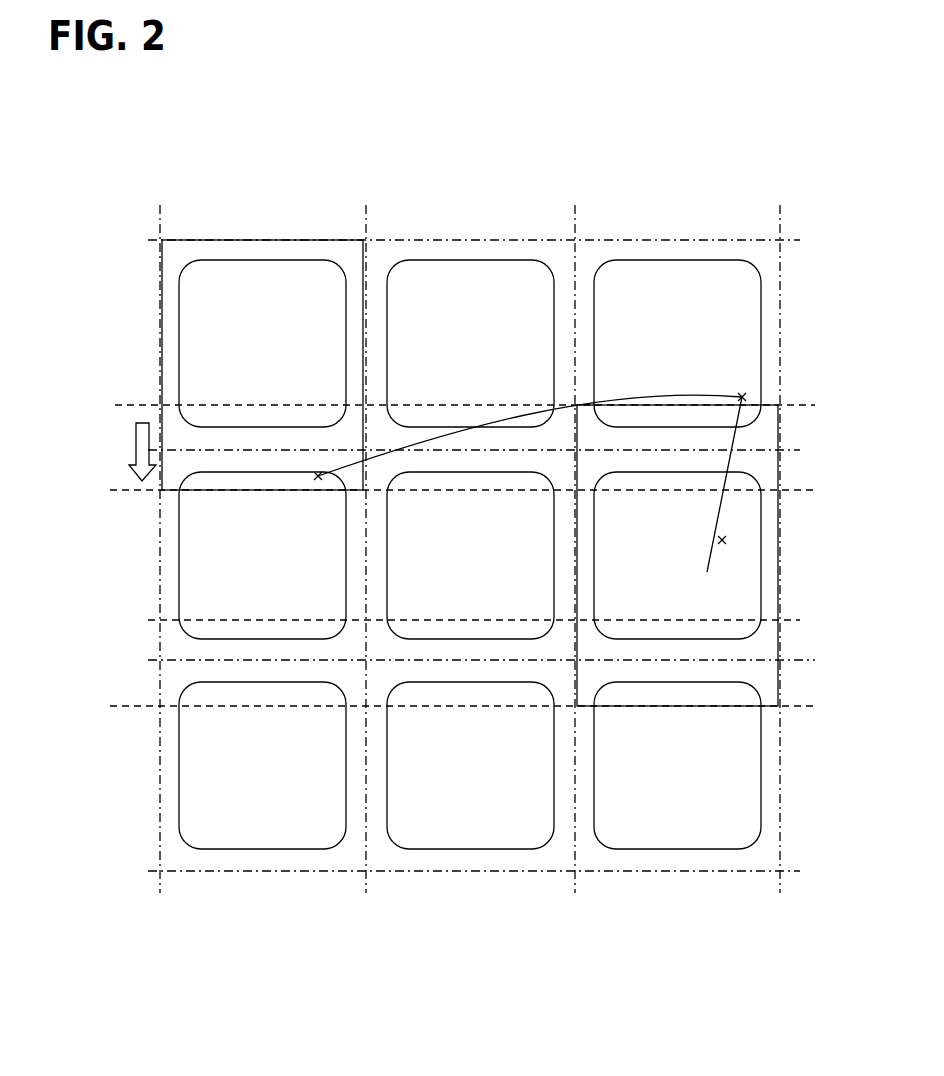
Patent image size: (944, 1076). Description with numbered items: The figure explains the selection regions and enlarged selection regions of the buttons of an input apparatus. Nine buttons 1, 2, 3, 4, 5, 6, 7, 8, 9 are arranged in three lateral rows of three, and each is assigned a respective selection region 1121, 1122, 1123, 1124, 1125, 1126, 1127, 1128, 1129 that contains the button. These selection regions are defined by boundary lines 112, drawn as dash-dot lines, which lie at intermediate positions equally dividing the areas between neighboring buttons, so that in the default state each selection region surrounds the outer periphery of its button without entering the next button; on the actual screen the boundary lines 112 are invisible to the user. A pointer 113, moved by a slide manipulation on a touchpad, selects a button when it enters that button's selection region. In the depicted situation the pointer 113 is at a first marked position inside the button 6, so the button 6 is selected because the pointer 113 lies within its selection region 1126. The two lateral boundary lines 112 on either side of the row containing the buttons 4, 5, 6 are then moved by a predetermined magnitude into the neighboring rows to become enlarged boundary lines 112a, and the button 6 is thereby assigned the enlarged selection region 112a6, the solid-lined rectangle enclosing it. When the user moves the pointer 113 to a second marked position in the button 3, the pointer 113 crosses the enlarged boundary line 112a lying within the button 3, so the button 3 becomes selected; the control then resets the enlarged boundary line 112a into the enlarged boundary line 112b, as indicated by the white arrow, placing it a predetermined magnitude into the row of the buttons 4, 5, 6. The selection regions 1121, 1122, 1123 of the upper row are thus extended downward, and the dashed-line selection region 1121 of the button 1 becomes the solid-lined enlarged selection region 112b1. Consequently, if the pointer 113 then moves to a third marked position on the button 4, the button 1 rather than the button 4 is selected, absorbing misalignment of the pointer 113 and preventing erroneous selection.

The boundary lines 112 is at (160, 213).
The enlarged boundary line 112a is at (120, 405).
The enlarged boundary line 112b is at (120, 490).
The enlarged selection region 112b1 is at (168, 343).
The enlarged selection region 112a6 is at (768, 535).
The selection region 1121 is at (280, 247).
The selection region 1122 is at (488, 247).
The selection region 1123 is at (697, 247).
The selection region 1124 is at (262, 463).
The selection region 1125 is at (470, 463).
The selection region 1126 is at (665, 463).
The selection region 1127 is at (262, 675).
The selection region 1128 is at (470, 675).
The selection region 1129 is at (672, 675).
The pointer 113 is at (747, 387).
The button 1 is at (214, 258).
The button 2 is at (422, 258).
The button 3 is at (629, 258).
The button 4 is at (215, 472).
The button 5 is at (423, 472).
The button 6 is at (625, 472).
The button 7 is at (215, 682).
The button 8 is at (423, 682).
The button 9 is at (630, 682).